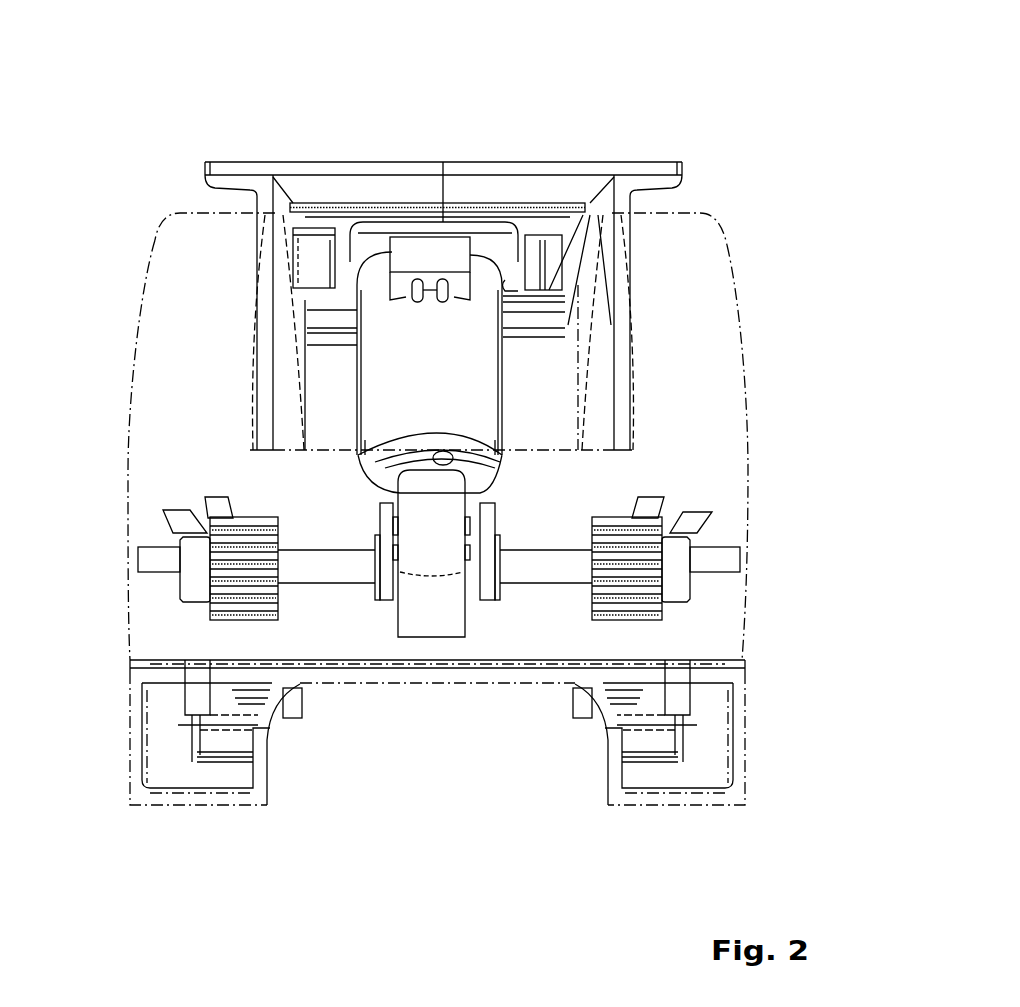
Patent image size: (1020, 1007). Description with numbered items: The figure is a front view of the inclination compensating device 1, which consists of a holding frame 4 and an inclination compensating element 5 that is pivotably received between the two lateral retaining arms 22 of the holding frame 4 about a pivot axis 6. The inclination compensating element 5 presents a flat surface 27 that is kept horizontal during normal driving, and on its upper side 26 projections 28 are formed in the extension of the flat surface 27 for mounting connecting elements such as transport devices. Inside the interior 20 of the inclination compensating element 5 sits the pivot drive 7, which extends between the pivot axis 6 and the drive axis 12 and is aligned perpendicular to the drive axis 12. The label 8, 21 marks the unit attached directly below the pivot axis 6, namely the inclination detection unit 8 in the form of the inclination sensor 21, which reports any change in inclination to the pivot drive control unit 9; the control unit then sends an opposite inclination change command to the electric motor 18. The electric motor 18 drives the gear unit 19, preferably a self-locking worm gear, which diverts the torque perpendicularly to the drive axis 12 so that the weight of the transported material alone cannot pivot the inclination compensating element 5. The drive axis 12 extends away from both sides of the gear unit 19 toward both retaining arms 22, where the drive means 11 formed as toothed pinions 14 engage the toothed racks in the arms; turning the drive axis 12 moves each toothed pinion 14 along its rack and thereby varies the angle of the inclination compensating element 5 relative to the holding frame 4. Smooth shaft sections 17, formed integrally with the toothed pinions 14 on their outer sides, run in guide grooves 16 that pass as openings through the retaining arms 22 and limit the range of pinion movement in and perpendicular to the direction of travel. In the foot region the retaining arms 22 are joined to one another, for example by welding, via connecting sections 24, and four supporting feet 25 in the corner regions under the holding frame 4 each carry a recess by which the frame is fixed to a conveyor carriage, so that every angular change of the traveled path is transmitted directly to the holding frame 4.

The inclination compensating device 1 is at (642, 64).
The holding frame 4 is at (744, 240).
The inclination compensating element 5 is at (470, 266).
The pivot axis 6 is at (320, 253).
The pivot drive 7 is at (413, 415).
The electronics unit 8 is at (430, 199).
The inclination sensor 21 is at (426, 250).
The pivot drive control unit 9 is at (418, 368).
The drive means 11 is at (434, 565).
The toothed pinion 14 is at (210, 558).
The drive axis 12 is at (526, 565).
The guide groove 16 is at (180, 526).
The smooth shaft section 17 is at (200, 582).
The electric motor 18 is at (627, 397).
The gear unit 19 is at (423, 620).
The interior 20 is at (552, 266).
The retaining arm 22 is at (162, 321).
The connecting section 24 is at (380, 683).
The supporting foot 25 is at (198, 805).
The upper side 26 is at (443, 122).
The flat surface 27 is at (295, 156).
The projection 28 is at (205, 160).